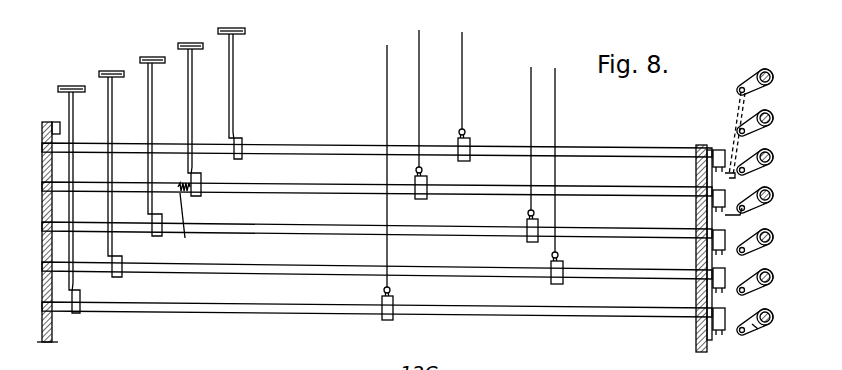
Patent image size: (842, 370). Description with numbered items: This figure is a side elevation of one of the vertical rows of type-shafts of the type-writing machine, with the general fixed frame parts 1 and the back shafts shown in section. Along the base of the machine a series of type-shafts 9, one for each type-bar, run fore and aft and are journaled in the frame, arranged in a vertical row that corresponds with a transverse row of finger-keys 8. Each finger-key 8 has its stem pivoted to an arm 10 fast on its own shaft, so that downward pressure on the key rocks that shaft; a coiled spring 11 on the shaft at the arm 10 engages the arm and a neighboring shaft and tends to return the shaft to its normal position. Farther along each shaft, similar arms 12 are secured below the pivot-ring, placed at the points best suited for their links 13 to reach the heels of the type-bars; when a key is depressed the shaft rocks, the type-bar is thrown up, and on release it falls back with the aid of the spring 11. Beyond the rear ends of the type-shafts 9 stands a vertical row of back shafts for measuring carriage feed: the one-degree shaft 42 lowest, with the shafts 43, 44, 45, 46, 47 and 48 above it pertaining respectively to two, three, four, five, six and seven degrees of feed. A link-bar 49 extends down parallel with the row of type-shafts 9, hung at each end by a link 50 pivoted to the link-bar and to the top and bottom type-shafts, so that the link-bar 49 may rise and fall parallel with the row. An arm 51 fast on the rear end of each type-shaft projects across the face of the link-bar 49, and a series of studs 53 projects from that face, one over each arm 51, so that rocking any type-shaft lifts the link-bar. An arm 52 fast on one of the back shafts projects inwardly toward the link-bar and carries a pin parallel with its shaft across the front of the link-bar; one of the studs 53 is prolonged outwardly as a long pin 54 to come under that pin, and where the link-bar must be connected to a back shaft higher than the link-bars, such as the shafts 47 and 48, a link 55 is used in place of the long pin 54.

The general fixed frame parts 1 is at (42, 287).
The finger-keys 8 is at (151, 167).
The type-shafts 9 is at (377, 230).
The arm 10 is at (243, 143).
The coiled spring 11 is at (184, 213).
The arms 12 is at (390, 292).
The links 13 is at (459, 158).
The one-degree shaft 42 is at (779, 315).
The two-degree back shaft 43 is at (779, 275).
The three-degree back shaft 44 is at (779, 235).
The four-degree back shaft 45 is at (773, 195).
The five-degree back shaft 46 is at (773, 157).
The six-degree back shaft 47 is at (773, 118).
The seven-degree back shaft 48 is at (773, 77).
The link-bar 49 is at (706, 262).
The link 50 is at (701, 168).
The arm 51 is at (714, 286).
The arm 52 is at (755, 327).
The studs 53 is at (718, 336).
The long pin 54 is at (728, 217).
The link 55 is at (736, 116).